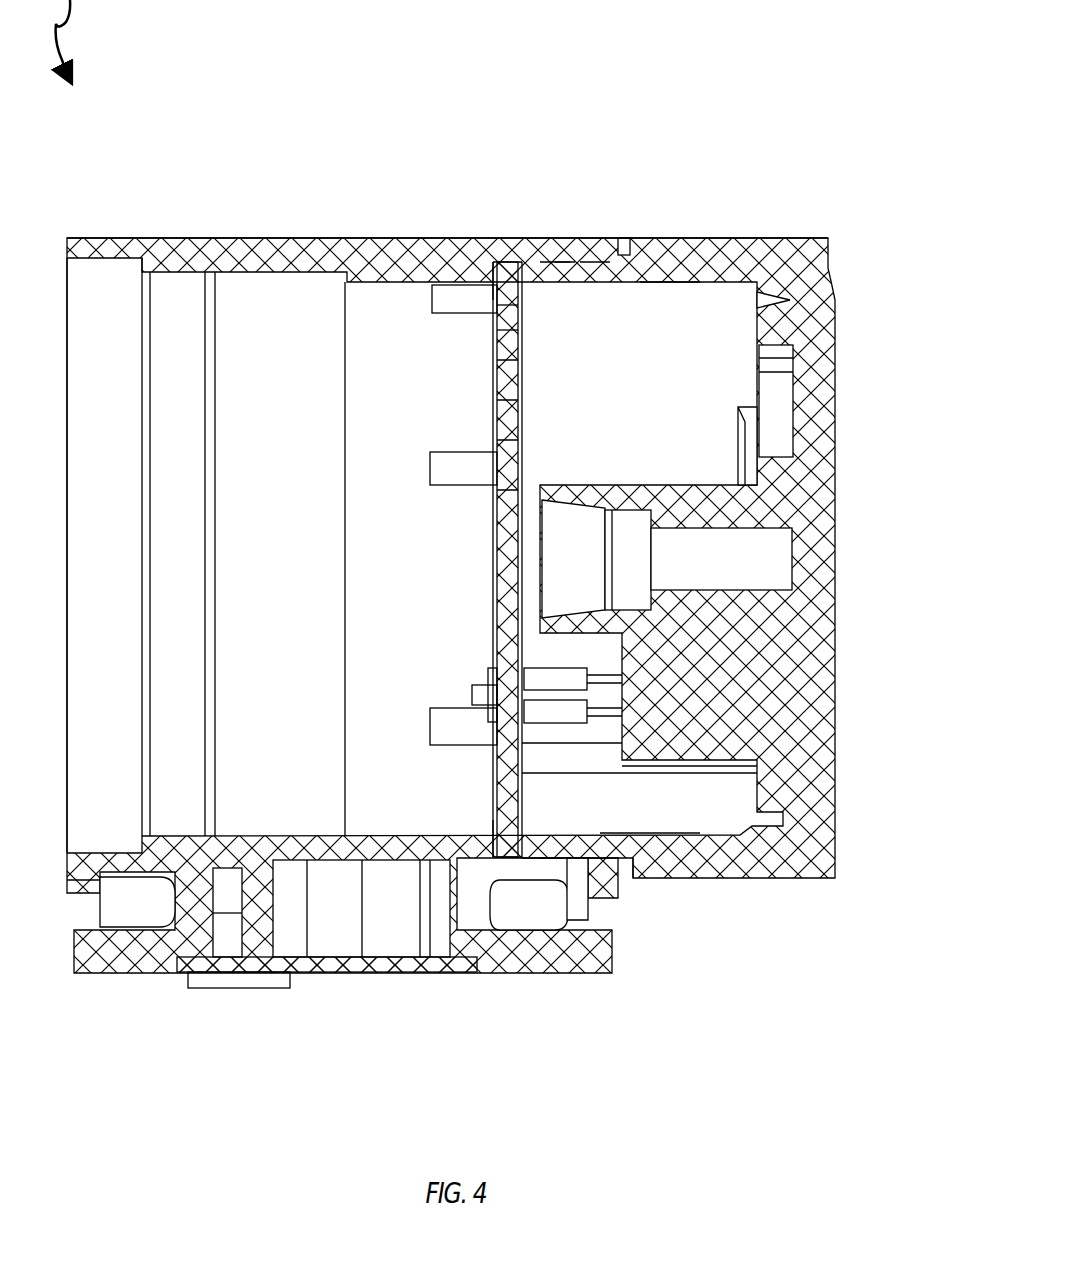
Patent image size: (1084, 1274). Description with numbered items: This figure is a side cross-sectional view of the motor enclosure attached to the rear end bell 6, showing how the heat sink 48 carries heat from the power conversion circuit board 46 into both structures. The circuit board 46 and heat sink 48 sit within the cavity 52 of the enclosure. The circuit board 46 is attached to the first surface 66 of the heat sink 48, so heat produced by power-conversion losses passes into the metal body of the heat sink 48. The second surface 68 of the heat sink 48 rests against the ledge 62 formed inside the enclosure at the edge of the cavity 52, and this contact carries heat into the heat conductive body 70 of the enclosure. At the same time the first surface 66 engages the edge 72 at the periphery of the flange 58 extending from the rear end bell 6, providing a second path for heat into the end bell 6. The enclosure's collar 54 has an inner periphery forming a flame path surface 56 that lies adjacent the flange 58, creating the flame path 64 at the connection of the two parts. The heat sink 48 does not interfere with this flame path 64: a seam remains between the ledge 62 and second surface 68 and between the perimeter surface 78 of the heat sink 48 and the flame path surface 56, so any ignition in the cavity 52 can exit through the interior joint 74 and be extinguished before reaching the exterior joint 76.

The rear end bell 6 is at (835, 403).
The power conversion circuit board 46 is at (522, 450).
The heat sink 48 is at (493, 545).
The cavity 52 is at (206, 555).
The collar 54 is at (555, 262).
The flame path surface 56 is at (560, 262).
The flange 58 is at (590, 282).
The ledge 62 is at (490, 282).
The flame path 64 is at (593, 255).
The first surface 66 is at (522, 378).
The second surface 68 is at (490, 325).
The heat conductive body 70 is at (245, 255).
The edge 72 is at (540, 264).
The interior joint 74 is at (505, 270).
The exterior joint 76 is at (625, 247).
The perimeter surface 78 is at (490, 300).